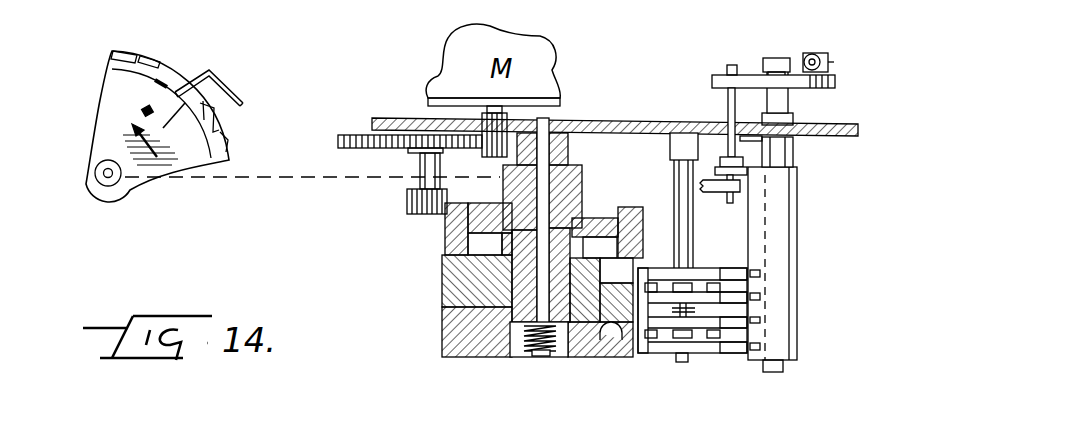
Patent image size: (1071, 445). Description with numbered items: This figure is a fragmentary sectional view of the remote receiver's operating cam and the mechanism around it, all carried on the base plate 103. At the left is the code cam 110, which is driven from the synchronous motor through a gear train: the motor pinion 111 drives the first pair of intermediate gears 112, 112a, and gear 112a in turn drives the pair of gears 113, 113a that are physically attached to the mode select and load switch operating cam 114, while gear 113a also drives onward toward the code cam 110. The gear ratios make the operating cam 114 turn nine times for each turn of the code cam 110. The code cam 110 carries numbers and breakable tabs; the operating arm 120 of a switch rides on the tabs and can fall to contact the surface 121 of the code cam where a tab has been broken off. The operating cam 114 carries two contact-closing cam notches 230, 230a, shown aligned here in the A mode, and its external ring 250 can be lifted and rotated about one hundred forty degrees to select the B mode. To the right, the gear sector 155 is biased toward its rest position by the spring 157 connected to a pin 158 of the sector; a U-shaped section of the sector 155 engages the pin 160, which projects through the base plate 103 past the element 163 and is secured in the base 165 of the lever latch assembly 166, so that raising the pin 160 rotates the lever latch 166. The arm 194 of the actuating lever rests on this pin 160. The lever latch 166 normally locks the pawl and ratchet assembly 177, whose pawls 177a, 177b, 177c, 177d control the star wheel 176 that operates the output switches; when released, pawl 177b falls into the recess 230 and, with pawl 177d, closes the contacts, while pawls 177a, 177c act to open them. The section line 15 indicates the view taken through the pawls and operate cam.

The code cam 110 is at (123, 53).
The surface of the code cam 121 is at (163, 92).
The operating arm 120 is at (212, 68).
The base plate 103 is at (590, 118).
The motor pinion 111 is at (480, 112).
The intermediate gear 112 is at (346, 133).
The intermediate gear 112a is at (406, 203).
The gear 113 is at (643, 207).
The gear 113a is at (585, 180).
The mode select and load switch operating cam 114 is at (442, 270).
The external ring 250 is at (490, 358).
The contact-closing recess 230 is at (600, 358).
The cam notch 230a is at (630, 358).
The gear sector 155 is at (718, 75).
The spring 157 is at (807, 53).
The pin 158 is at (828, 58).
The pin 160 is at (728, 98).
The collar 163 is at (742, 128).
The base 165 is at (760, 163).
The lever latch assembly 166 is at (793, 197).
The star wheel 176 is at (727, 273).
The pawl and ratchet assembly 177 is at (660, 358).
The pawl 177a is at (733, 358).
The pawl 177b is at (737, 324).
The pawl 177c is at (740, 300).
The pawl 177d is at (742, 270).
The arm 194 is at (706, 188).
The section line 15- 15 is at (396, 278).